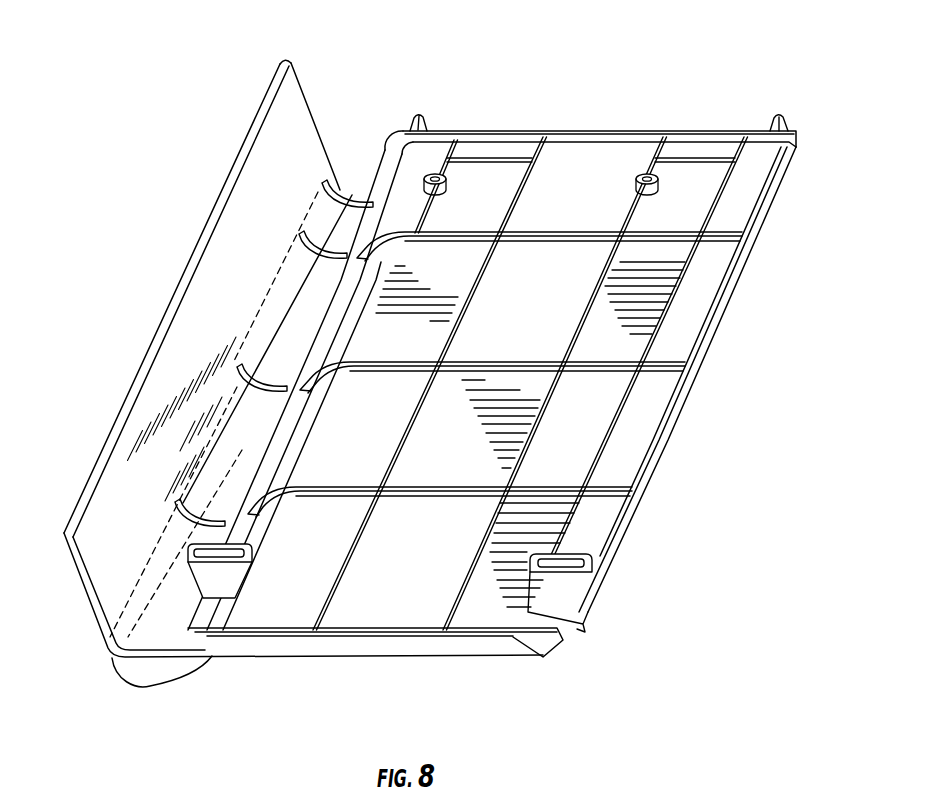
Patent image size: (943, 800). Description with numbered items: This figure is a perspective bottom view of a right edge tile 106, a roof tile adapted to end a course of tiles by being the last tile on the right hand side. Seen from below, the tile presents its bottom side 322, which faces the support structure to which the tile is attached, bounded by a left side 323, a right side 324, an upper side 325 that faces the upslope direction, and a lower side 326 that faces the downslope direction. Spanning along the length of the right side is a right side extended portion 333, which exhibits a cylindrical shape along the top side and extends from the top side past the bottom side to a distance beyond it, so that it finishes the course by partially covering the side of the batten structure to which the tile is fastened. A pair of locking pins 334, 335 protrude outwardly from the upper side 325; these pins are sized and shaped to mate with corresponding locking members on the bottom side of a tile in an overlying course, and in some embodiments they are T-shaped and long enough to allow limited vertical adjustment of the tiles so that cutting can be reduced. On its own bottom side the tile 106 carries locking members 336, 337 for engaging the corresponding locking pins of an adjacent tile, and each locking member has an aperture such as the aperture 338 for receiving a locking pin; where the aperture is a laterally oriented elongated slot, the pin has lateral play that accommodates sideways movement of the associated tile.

The right edge tile 106 is at (634, 88).
The bottom side 322 is at (695, 324).
The left side 323 is at (681, 418).
The right side 324 is at (79, 582).
The upper side 325 is at (618, 130).
The lower side 326 is at (288, 648).
The right side extended portion 333 is at (294, 116).
The locking pin 334 is at (782, 116).
The locking pin 335 is at (421, 119).
The locking member 336 is at (212, 577).
The locking member 337 is at (557, 583).
The aperture 338 is at (572, 568).